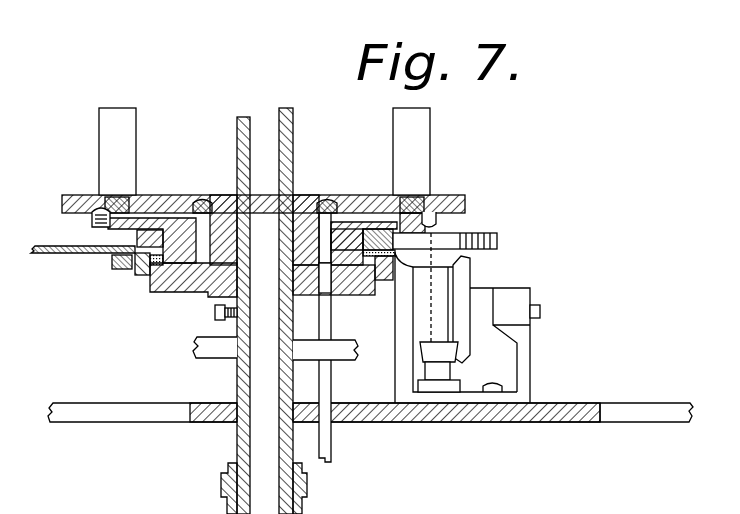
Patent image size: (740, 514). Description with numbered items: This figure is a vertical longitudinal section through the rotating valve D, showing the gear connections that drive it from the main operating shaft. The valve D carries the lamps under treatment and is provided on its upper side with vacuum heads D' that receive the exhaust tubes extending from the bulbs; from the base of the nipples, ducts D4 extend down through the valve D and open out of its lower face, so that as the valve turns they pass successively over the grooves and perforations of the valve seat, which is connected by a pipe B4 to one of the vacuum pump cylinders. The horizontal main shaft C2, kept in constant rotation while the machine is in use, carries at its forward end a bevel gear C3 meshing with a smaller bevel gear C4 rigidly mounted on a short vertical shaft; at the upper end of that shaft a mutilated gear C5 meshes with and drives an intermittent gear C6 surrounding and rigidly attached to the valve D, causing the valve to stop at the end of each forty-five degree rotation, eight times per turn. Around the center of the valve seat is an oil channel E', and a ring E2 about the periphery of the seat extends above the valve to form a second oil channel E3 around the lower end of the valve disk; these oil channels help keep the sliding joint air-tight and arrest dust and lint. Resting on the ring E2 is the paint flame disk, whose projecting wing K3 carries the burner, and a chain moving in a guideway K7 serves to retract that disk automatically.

The vacuum head D' is at (284, 160).
The valve D is at (263, 192).
The duct D4 is at (186, 216).
The intermittent gear C6 is at (130, 243).
The projecting wing or ledge K3 is at (60, 256).
The guideway K7 is at (121, 271).
The oil channel E' is at (201, 311).
The mutilated gear C5 is at (478, 241).
The bevel gear C3 is at (467, 278).
The main shaft C2 is at (541, 308).
The ring E2 is at (363, 294).
The second oil channel E3 is at (357, 349).
The smaller bevel gear C4 is at (450, 354).
The pipe B4 is at (332, 443).